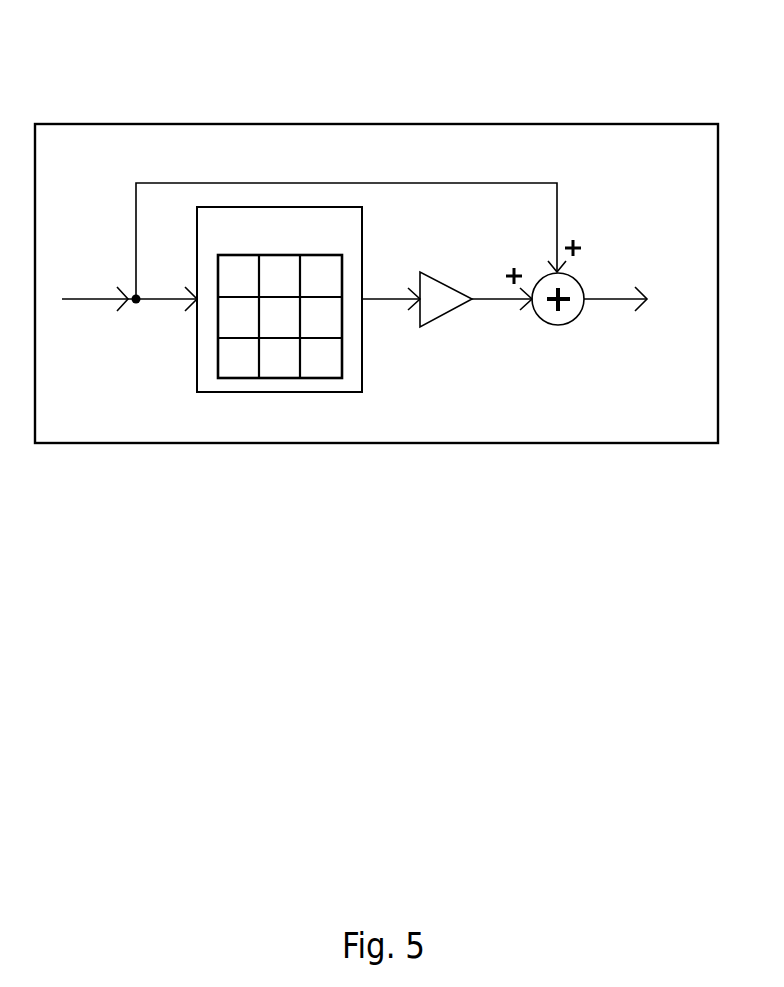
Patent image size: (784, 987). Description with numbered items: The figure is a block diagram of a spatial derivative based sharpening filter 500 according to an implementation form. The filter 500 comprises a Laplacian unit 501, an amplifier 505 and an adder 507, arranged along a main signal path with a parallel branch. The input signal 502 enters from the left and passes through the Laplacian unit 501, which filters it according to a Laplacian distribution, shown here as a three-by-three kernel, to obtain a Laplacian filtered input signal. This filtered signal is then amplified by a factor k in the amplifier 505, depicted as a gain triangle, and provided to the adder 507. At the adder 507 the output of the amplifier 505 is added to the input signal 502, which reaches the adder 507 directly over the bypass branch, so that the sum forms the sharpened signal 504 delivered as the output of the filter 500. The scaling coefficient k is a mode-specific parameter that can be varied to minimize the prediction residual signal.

The spatial derivative based sharpening filter 500 is at (271, 118).
The Laplacian unit 501 is at (188, 390).
The input signal 502 is at (68, 230).
The sharpened signal 504 is at (674, 228).
The amplifier 505 is at (435, 312).
The adder 507 is at (575, 309).